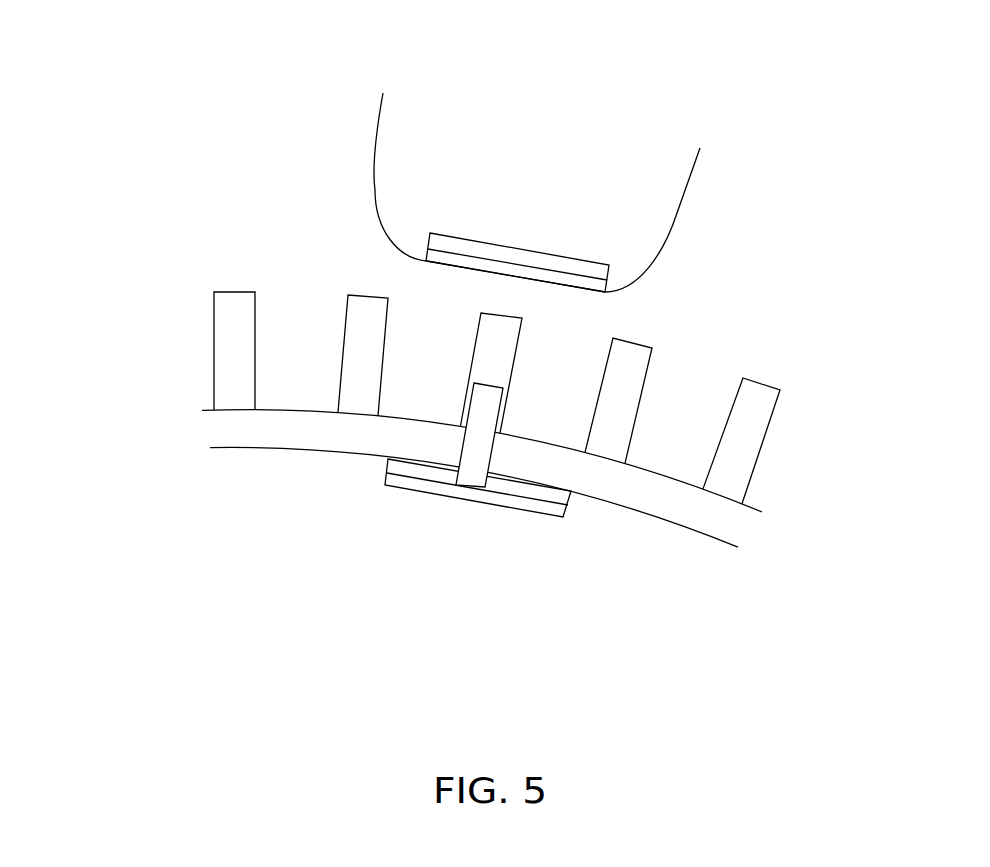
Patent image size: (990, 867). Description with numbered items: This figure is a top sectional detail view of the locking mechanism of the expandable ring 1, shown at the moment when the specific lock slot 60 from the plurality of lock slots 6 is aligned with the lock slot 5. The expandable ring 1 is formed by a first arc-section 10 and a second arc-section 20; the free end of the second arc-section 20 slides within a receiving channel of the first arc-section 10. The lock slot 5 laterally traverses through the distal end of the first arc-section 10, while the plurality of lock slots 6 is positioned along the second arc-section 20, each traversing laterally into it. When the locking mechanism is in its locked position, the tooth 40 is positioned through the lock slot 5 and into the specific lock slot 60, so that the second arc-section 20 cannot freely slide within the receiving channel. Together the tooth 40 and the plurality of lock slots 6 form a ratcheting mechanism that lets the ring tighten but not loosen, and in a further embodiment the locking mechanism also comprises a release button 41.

The expandable ring 1 is at (906, 146).
The lock slot 5 is at (489, 415).
The plurality of lock slots 6 is at (215, 306).
The first arc-section 10 is at (682, 517).
The second arc-section 20 is at (405, 260).
The tooth 40 is at (485, 455).
The release button 41 is at (528, 255).
The specific lock slot 60 is at (517, 329).